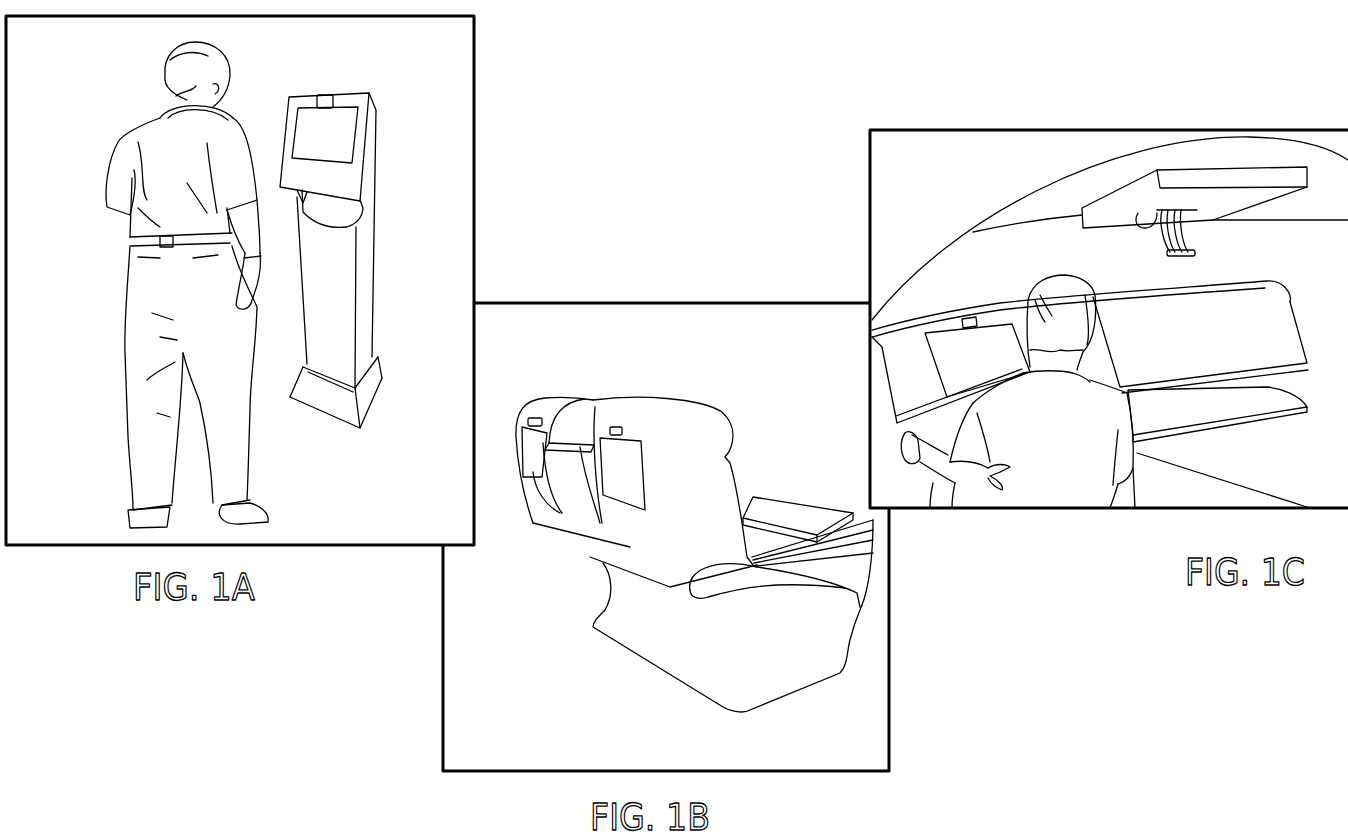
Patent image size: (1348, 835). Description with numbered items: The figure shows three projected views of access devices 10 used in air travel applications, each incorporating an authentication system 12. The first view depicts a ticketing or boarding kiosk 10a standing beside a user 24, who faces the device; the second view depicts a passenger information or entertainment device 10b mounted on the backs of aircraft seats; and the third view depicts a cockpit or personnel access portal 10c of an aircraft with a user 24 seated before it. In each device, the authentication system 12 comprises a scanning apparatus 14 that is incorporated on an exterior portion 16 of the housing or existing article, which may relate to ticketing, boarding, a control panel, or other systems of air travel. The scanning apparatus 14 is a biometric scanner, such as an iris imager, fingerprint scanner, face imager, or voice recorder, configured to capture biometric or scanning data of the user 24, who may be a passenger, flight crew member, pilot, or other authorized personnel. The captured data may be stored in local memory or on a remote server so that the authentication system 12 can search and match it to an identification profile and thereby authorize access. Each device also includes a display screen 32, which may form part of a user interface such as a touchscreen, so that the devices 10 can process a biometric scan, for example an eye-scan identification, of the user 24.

In FIG. 1B, the devices 10 is at (646, 445).
In FIG. 1A, the devices 10 is at (348, 232).
In FIG. 1C, the devices 10 is at (966, 310).
In FIG. 1A, the ticketing or boarding kiosk 10a is at (348, 232).
In FIG. 1B, the passenger information or entertainment device 10b is at (646, 445).
In FIG. 1C, the cockpit or personnel access portal 10c is at (966, 310).
In FIG. 1B, the authentication system 12 is at (684, 441).
In FIG. 1A, the authentication system 12 is at (455, 79).
In FIG. 1C, the authentication system 12 is at (893, 208).
In FIG. 1B, the scanning apparatus 14 is at (613, 430).
In FIG. 1A, the scanning apparatus 14 is at (320, 95).
In FIG. 1C, the scanning apparatus 14 is at (962, 313).
In FIG. 1B, the exterior portion 16 is at (687, 493).
In FIG. 1A, the exterior portion 16 is at (343, 182).
In FIG. 1C, the exterior portion 16 is at (920, 395).
In FIG. 1A, the user 24 is at (133, 142).
In FIG. 1C, the user 24 is at (1043, 477).
In FIG. 1B, the display screen 32 is at (623, 497).
In FIG. 1A, the display screen 32 is at (337, 142).
In FIG. 1C, the display screen 32 is at (945, 350).